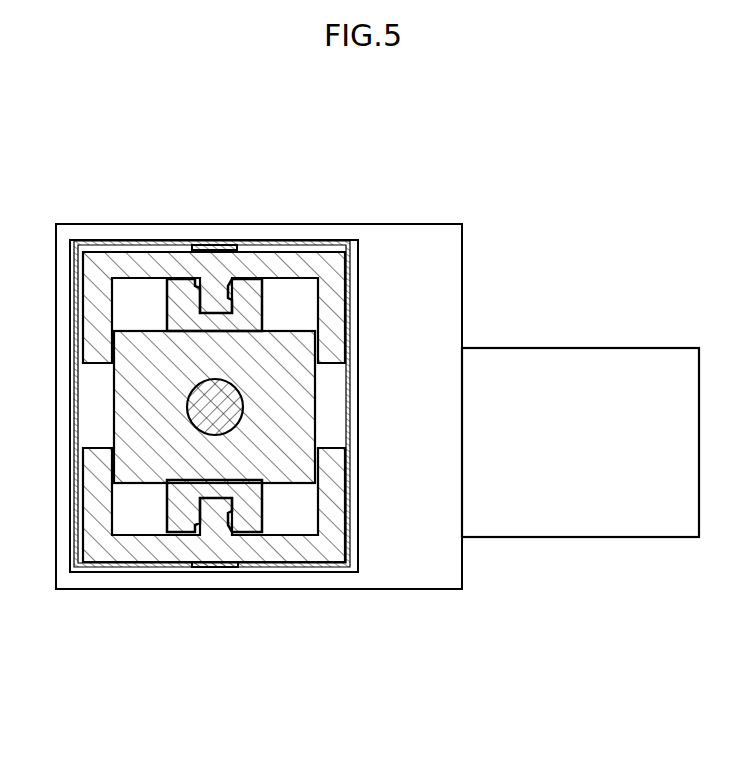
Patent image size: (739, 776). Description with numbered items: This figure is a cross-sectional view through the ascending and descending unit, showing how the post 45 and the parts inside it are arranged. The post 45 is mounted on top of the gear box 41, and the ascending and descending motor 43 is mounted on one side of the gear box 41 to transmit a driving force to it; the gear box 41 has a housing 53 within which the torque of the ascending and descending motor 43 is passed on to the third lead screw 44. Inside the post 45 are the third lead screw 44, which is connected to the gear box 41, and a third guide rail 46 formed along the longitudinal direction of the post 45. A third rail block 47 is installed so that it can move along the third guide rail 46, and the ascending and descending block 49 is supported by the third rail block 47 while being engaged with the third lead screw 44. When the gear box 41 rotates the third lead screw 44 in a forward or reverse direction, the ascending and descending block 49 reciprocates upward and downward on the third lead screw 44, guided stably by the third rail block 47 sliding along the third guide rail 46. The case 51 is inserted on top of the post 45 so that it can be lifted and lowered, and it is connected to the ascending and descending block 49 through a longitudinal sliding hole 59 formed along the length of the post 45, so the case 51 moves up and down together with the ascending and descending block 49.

The gear box 41 is at (405, 216).
The ascending and descending motor 43 is at (578, 356).
The third lead screw 44 is at (202, 418).
The post 45 is at (118, 262).
The third guide rail 46 is at (218, 298).
The third rail block 47 is at (187, 290).
The ascending and descending block 49 is at (296, 472).
The case 51 is at (296, 241).
The housing 53 is at (441, 237).
The longitudinal sliding hole 59 is at (93, 376).